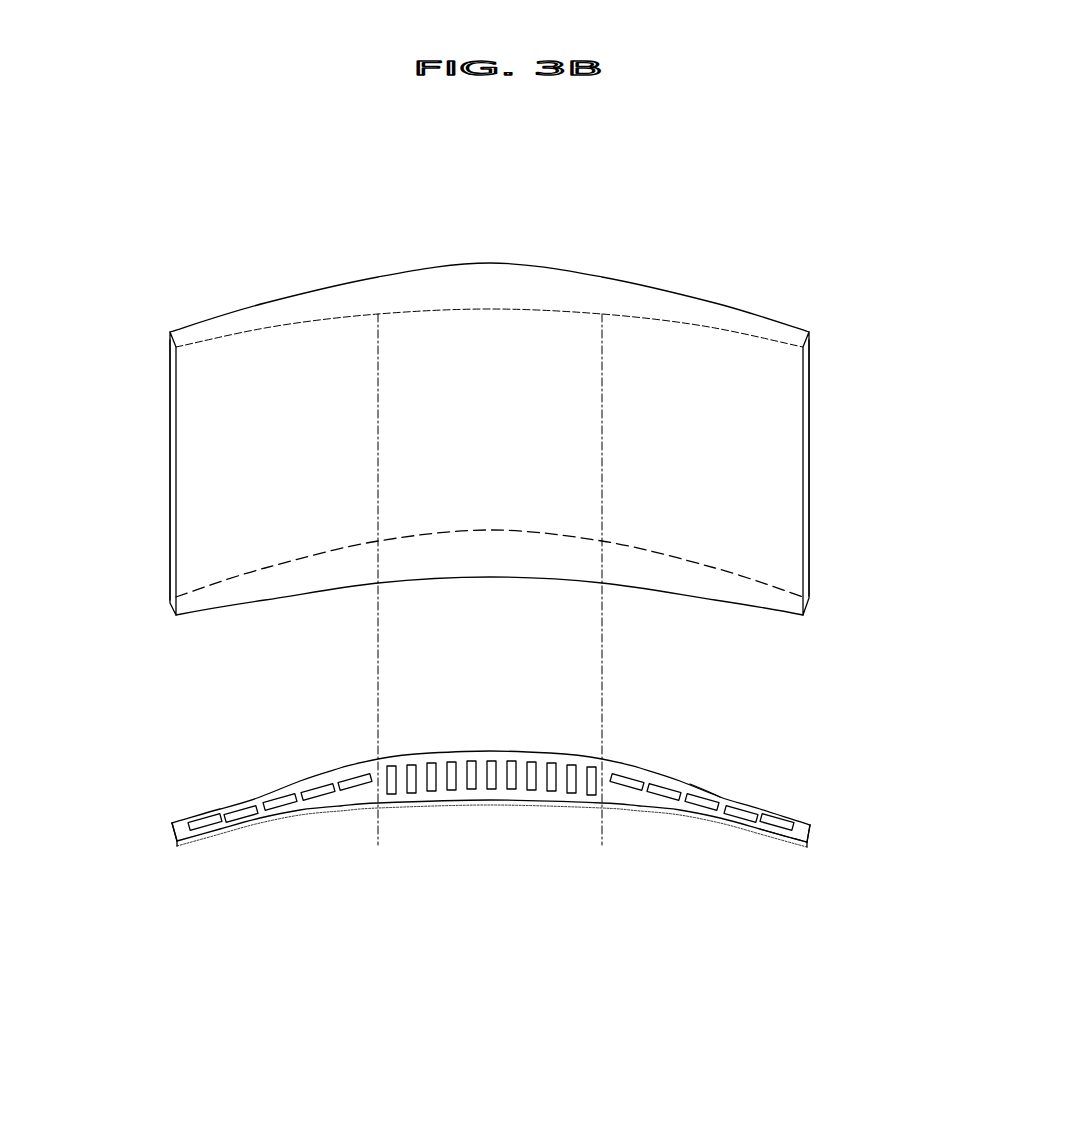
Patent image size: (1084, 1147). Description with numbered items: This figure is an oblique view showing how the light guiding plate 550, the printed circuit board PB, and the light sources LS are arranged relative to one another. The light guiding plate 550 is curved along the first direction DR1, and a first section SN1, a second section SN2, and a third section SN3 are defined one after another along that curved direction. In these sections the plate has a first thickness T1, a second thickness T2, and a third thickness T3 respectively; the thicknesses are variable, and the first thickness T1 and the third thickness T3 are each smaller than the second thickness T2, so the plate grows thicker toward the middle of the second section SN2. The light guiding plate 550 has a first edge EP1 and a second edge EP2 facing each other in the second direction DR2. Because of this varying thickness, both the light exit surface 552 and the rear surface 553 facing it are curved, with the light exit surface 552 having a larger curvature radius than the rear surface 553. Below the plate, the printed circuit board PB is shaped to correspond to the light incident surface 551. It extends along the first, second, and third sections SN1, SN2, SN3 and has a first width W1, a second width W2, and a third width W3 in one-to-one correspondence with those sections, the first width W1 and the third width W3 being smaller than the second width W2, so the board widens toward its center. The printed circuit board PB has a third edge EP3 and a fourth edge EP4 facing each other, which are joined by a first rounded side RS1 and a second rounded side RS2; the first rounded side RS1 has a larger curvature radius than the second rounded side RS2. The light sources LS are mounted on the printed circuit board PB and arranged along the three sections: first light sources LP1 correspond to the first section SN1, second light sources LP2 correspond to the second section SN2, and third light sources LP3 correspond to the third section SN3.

The light guiding plate 550 is at (532, 410).
The light incident surface 551 is at (779, 601).
The light exit surface 552 is at (774, 511).
The rear surface 553 is at (553, 262).
The first thickness T1 is at (265, 347).
The second thickness T2 is at (490, 263).
The third thickness T3 is at (715, 347).
The first edge EP1 is at (170, 452).
The second edge EP2 is at (811, 452).
The third edge EP3 is at (170, 830).
The fourth edge EP4 is at (812, 829).
The first section SN1 is at (378, 620).
The second section SN2 is at (378, 620).
The third section SN3 is at (602, 620).
The printed circuit board PB is at (489, 827).
The first light sources LP1 is at (245, 813).
The second light sources LP2 is at (450, 788).
The third light sources LP3 is at (655, 793).
The light sources LS is at (222, 897).
The first width W1 is at (288, 770).
The second width W2 is at (500, 800).
The third width W3 is at (692, 770).
The first rounded side RS1 is at (780, 846).
The second rounded side RS2 is at (697, 789).
The first direction DR1 is at (112, 1048).
The second direction DR2 is at (112, 1048).